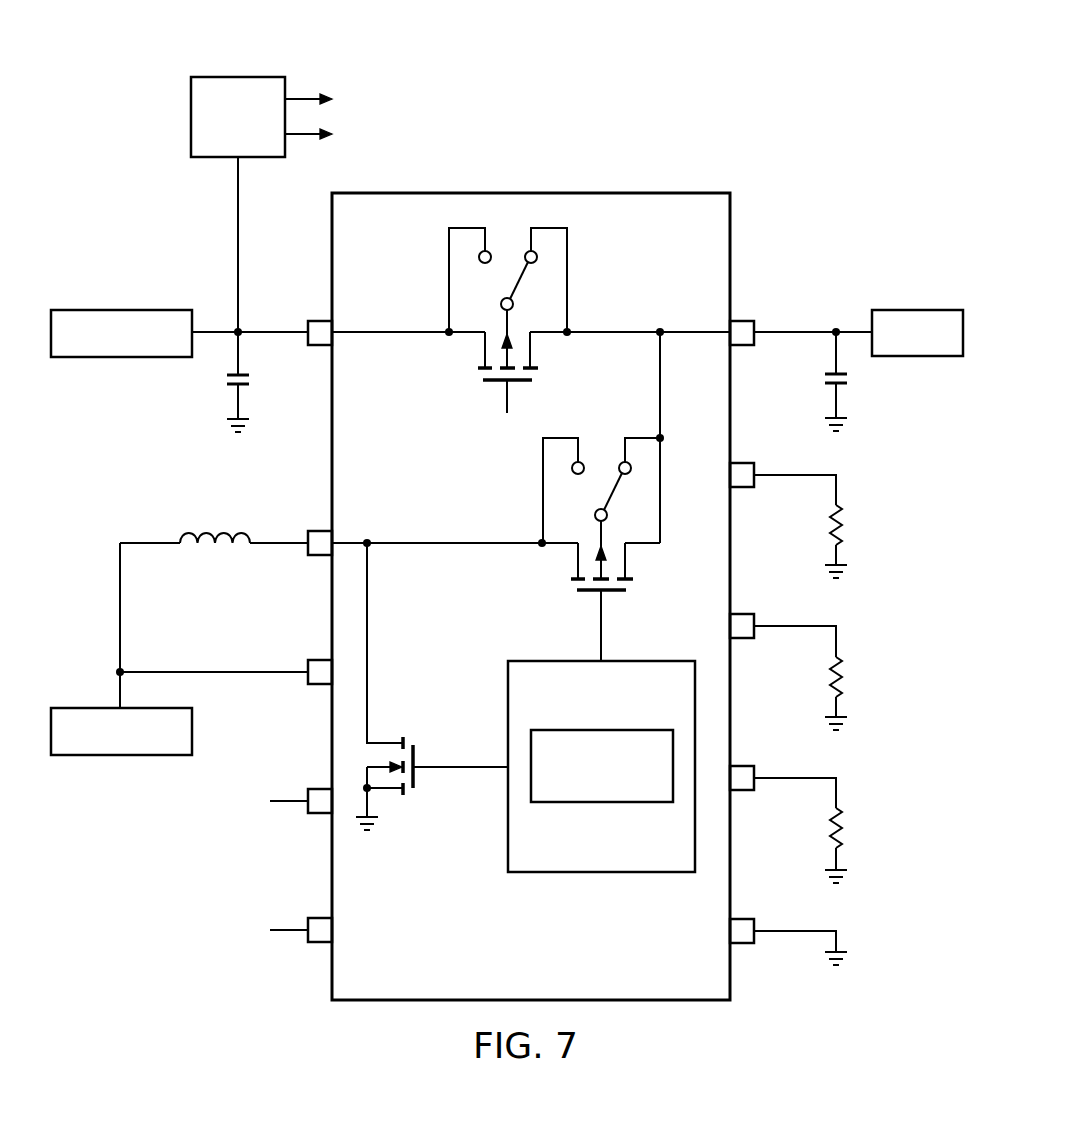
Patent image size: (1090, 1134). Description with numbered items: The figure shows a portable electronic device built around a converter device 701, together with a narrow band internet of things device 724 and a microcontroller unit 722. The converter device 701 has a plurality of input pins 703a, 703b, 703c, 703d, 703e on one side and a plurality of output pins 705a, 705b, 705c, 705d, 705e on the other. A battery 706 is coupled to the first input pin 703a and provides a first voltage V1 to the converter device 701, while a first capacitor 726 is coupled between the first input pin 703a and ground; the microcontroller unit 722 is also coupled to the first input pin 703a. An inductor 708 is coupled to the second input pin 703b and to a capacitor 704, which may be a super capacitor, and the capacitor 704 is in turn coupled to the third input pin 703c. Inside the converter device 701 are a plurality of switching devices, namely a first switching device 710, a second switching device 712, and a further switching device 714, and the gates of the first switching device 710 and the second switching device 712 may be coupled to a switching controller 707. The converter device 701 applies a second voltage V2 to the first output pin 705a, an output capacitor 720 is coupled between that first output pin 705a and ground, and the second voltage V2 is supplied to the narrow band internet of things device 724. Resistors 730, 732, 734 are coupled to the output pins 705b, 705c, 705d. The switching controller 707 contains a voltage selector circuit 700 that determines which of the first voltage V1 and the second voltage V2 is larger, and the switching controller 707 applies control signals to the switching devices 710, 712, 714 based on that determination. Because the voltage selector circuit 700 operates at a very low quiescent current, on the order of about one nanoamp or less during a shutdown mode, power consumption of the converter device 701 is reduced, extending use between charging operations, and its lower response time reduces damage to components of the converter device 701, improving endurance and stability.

The converter device 701 is at (626, 193).
The microcontroller unit (MCU) 722 is at (226, 76).
The battery 706 is at (118, 309).
The first capacitor 726 is at (226, 380).
The first input pin 703a is at (316, 347).
The second input pin 703b is at (316, 557).
The third input pin 703c is at (316, 686).
The input pin 703d is at (316, 815).
The input pin 703e is at (316, 944).
The inductor 708 is at (206, 522).
The capacitor 704 is at (108, 756).
The switching device 714 is at (590, 275).
The second switching device 712 is at (521, 485).
The first switching device 710 is at (418, 780).
The switching controller 707 is at (612, 873).
The voltage selector circuit 700 is at (604, 803).
The narrow band internet of things (NB-IOT) device 724 is at (916, 309).
The output capacitor 720 is at (849, 380).
The first output pin 705a is at (745, 347).
The output pin 705b is at (745, 488).
The output pin 705c is at (745, 639).
The output pin 705d is at (745, 791).
The output pin 705e is at (745, 944).
The resistor 730 is at (845, 520).
The resistor 732 is at (845, 680).
The resistor 734 is at (845, 830).